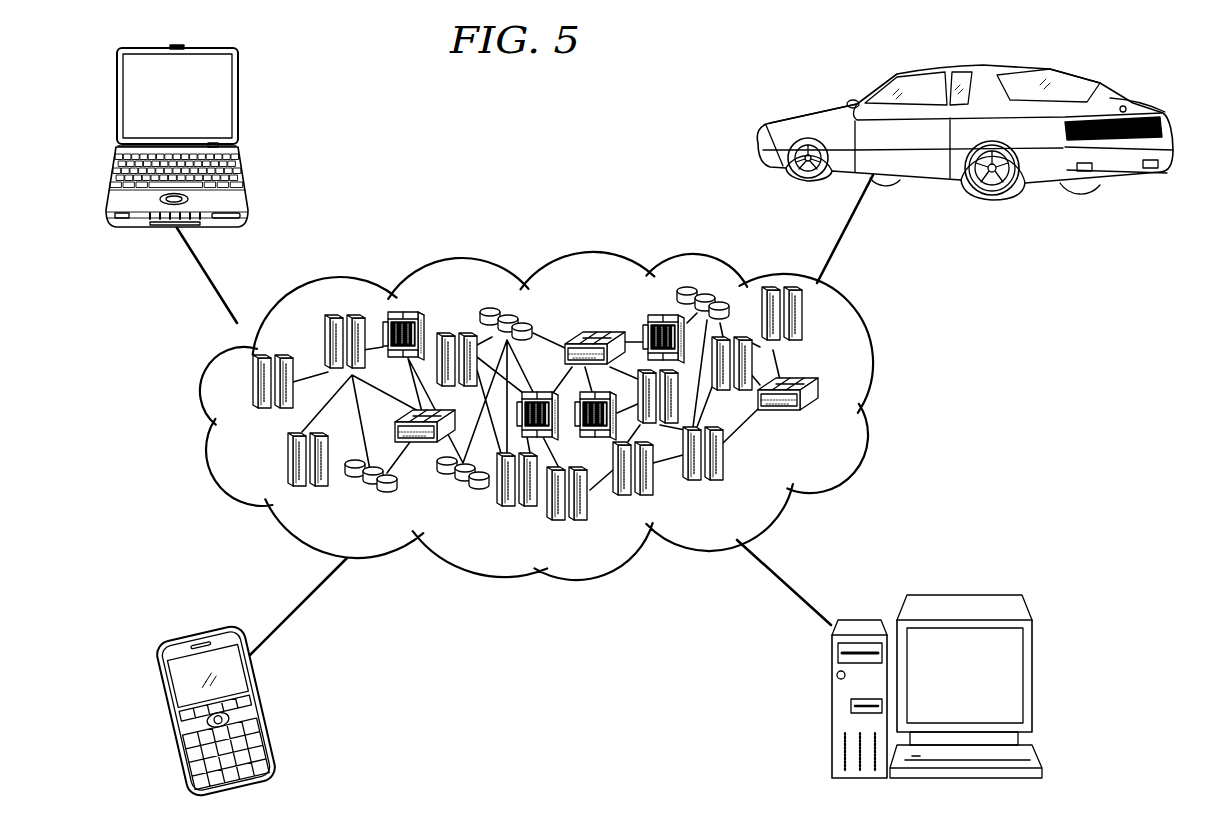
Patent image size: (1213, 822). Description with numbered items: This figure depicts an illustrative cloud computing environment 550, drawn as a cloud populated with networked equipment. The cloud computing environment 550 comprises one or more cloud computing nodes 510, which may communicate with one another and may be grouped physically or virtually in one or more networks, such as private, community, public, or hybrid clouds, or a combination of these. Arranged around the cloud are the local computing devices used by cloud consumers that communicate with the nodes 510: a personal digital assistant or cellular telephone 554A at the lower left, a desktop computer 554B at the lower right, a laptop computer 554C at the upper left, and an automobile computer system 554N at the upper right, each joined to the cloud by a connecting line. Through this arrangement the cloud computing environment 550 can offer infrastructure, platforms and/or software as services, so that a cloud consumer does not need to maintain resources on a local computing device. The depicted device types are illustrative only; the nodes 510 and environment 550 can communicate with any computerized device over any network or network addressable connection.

The laptop computer 554C is at (114, 90).
The automobile computer system 554N is at (1136, 101).
The personal digital assistant or cellular telephone 554A is at (162, 700).
The desktop computer 554B is at (964, 596).
The cloud computing environment 550 is at (870, 340).
The cloud computing nodes 510 is at (827, 420).